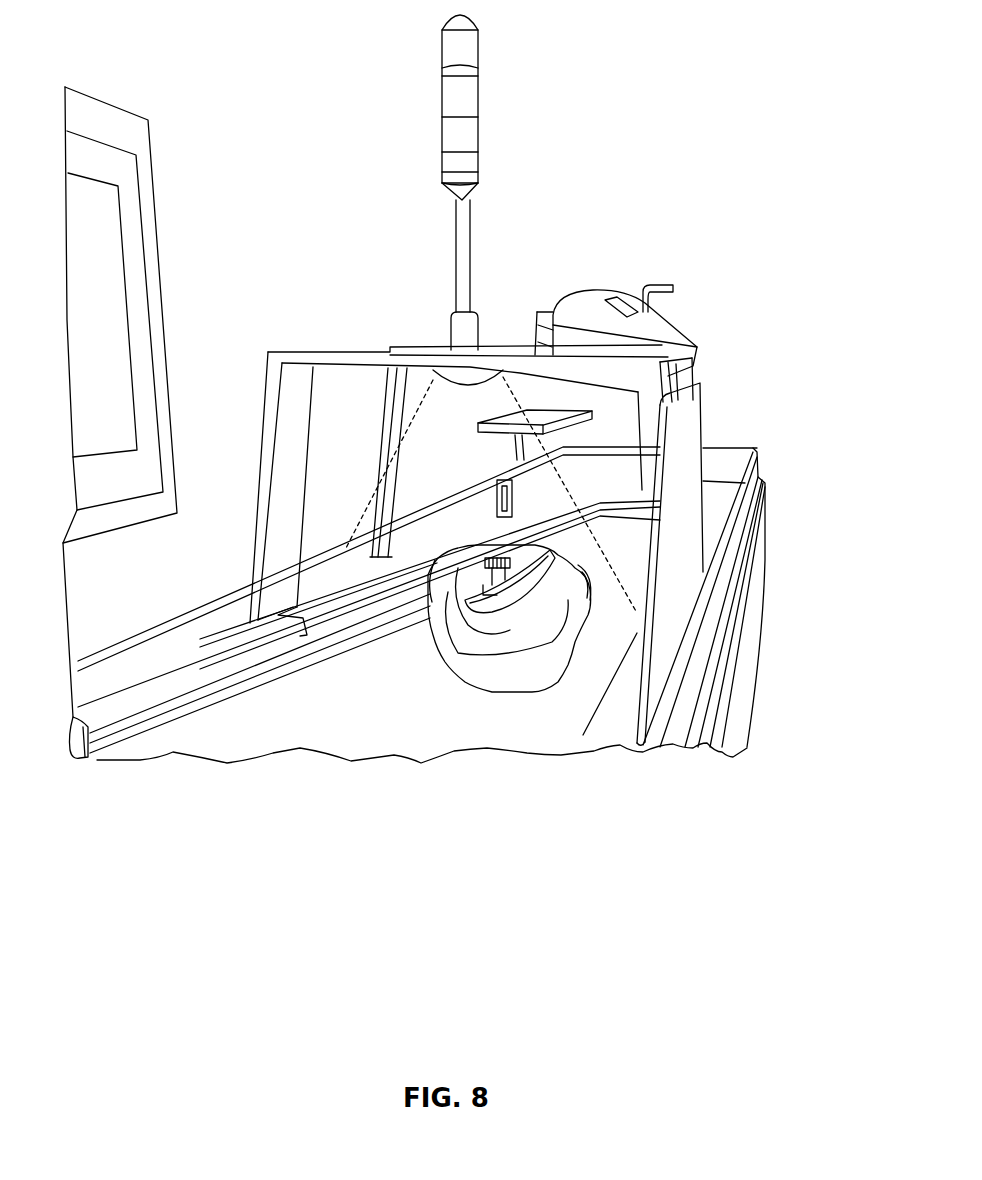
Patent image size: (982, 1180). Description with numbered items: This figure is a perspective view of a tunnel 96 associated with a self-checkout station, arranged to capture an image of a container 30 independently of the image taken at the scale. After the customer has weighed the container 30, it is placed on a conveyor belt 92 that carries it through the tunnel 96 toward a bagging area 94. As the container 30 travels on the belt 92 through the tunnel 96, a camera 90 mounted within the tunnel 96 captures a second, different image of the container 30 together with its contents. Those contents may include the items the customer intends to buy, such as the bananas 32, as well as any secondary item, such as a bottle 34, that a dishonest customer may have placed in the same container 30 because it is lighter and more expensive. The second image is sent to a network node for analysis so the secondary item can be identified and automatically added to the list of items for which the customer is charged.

The tunnel 96 is at (288, 305).
The conveyor belt 92 is at (226, 740).
The camera 90 is at (472, 380).
The bagging area 94 is at (737, 442).
The container 30 is at (588, 618).
The bananas 32 is at (511, 618).
The bottle 34 is at (487, 572).